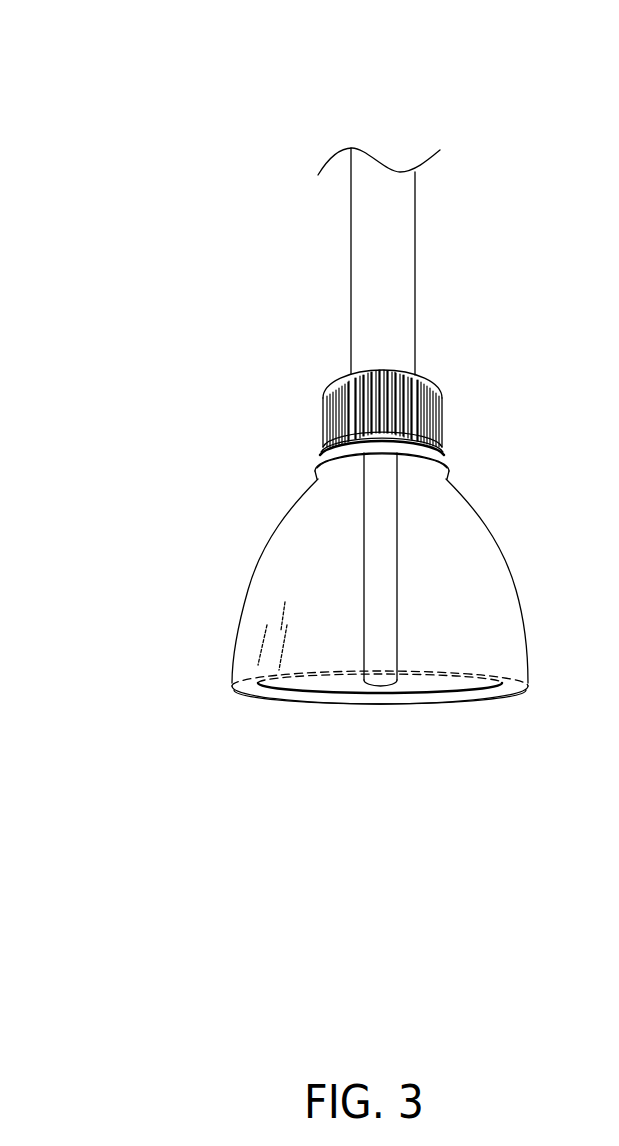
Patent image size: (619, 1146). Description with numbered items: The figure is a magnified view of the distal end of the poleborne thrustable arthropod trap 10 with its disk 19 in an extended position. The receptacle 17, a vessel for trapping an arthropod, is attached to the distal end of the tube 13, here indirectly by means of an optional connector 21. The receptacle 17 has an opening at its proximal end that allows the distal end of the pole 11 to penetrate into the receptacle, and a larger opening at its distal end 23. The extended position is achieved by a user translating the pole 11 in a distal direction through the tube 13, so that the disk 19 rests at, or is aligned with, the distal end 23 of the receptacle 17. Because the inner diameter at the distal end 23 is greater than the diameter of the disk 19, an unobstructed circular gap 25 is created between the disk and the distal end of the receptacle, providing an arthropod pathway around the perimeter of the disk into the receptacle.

The poleborne thrustable arthropod trap 10 is at (120, 85).
The pole 11 is at (398, 565).
The tube 13 is at (350, 260).
The receptacle 17 is at (272, 535).
The disk 19 is at (418, 686).
The connector 21 is at (438, 385).
The distal end 23 is at (217, 686).
The gap 25 is at (237, 688).